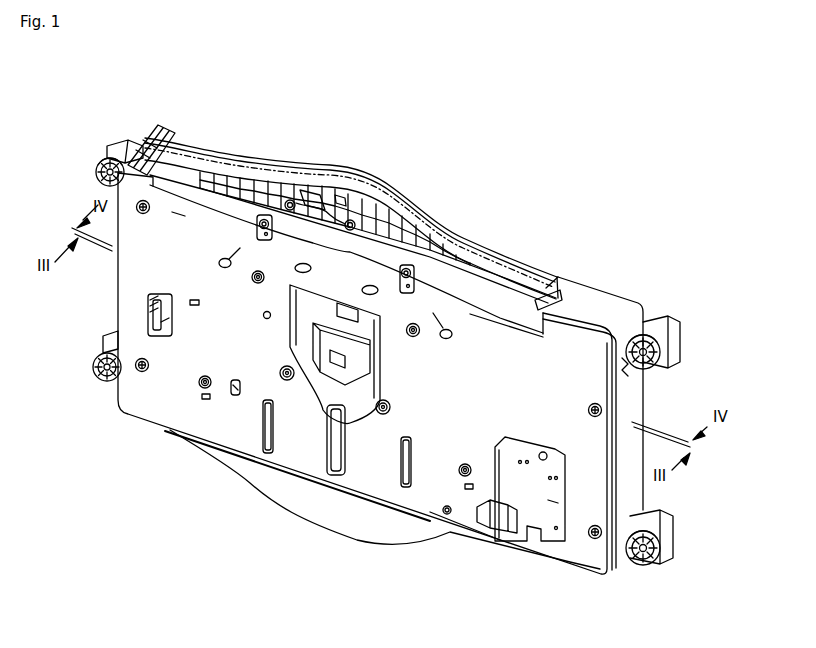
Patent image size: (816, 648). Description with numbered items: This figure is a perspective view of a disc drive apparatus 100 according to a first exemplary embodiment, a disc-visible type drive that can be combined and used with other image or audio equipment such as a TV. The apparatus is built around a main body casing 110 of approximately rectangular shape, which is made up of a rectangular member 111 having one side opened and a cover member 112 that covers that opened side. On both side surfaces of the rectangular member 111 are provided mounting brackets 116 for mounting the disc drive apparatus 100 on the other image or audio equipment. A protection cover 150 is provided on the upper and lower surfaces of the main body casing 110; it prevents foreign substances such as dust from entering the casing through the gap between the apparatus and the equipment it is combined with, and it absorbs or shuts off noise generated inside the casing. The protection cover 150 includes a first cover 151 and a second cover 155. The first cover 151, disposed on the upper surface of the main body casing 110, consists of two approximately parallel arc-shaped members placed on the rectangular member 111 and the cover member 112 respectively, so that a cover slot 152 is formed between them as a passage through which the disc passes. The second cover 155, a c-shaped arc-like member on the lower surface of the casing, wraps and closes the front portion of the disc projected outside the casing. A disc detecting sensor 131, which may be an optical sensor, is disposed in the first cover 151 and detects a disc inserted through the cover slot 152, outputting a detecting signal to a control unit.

The disc drive apparatus 100 is at (263, 76).
The main body casing 110 is at (572, 270).
The rectangular member 111 is at (600, 290).
The cover member 112 is at (583, 513).
The mounting brackets 116 is at (112, 143).
The disc detecting sensor 131 is at (296, 188).
The protection cover 150 is at (396, 182).
The first cover 151 is at (430, 211).
The cover slot 152 is at (353, 177).
The second cover 155 is at (353, 527).